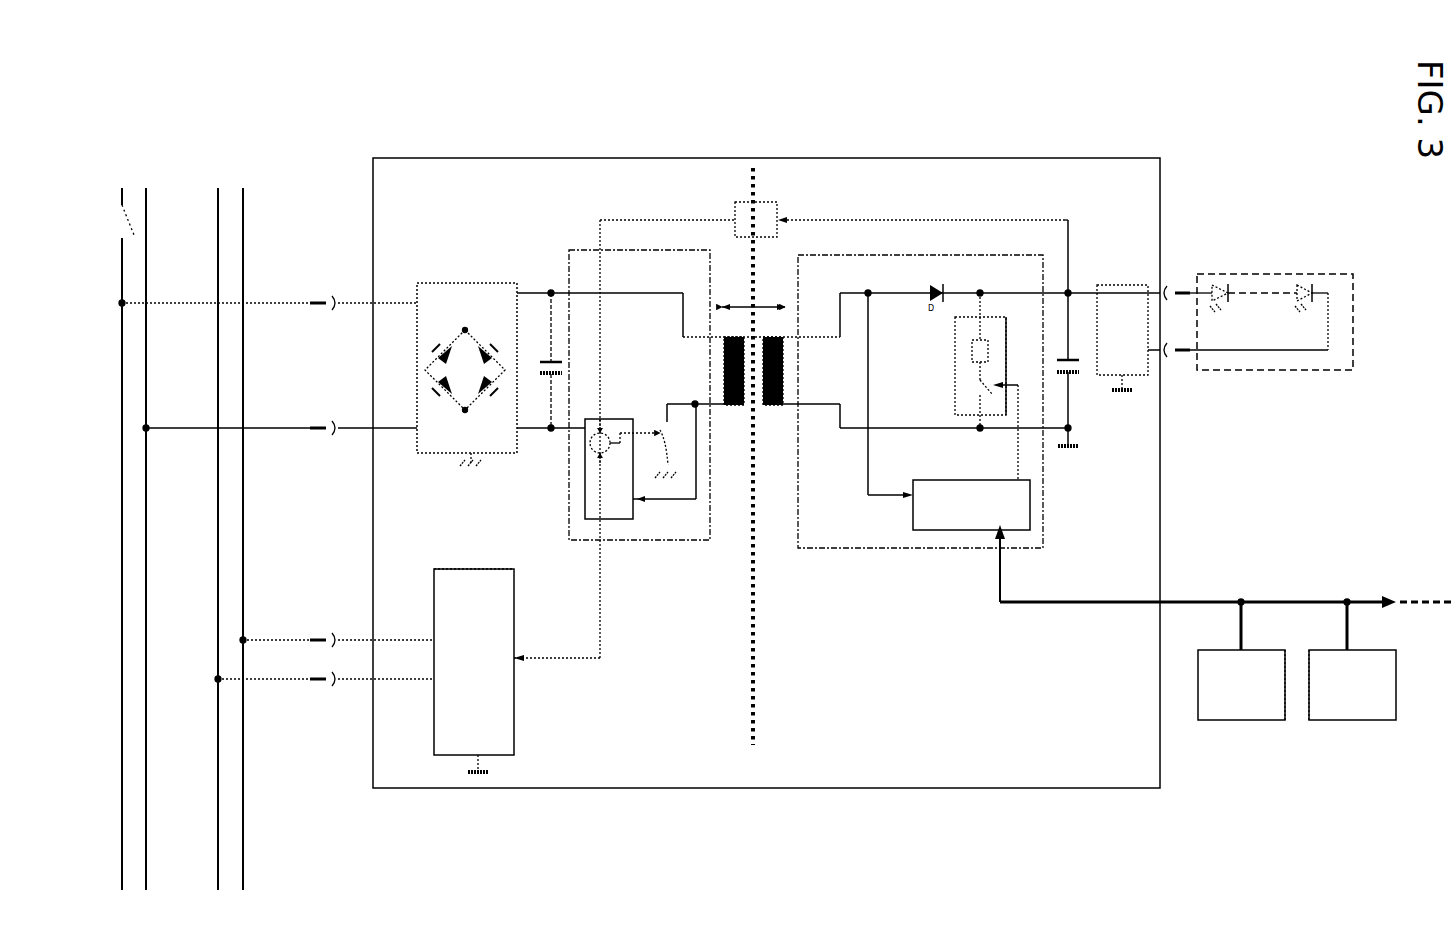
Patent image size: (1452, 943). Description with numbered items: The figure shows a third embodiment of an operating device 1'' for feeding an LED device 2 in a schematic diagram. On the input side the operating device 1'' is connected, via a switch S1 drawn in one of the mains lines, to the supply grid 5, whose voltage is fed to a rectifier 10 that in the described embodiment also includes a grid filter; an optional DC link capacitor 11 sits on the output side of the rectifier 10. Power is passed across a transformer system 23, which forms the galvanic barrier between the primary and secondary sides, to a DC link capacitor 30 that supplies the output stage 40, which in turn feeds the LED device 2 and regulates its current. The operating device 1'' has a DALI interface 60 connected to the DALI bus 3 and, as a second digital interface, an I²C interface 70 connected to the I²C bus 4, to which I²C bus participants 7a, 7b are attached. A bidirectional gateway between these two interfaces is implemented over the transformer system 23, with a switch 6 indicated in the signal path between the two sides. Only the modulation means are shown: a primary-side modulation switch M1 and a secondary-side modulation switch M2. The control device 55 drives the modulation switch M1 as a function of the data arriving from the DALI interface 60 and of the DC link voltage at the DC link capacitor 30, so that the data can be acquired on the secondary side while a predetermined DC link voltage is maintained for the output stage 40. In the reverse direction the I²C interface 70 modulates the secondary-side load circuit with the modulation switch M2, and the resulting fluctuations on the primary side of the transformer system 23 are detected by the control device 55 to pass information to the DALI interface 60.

The operating device 1'' is at (766, 448).
The LED device 2 is at (1298, 272).
The DALI bus 3 is at (232, 197).
The I²C bus 4 is at (1270, 600).
The supply grid 5 is at (131, 150).
The switch 6 is at (740, 300).
The I²C bus participant 7a is at (1230, 722).
The I²C bus participant 7b is at (1352, 722).
The rectifier 10 is at (449, 282).
The DC link capacitor 11 is at (545, 358).
The transformer system 23 is at (757, 405).
The DC link capacitor 30 is at (1070, 358).
The output stage 40 is at (1122, 285).
The control device 55 is at (603, 520).
The DALI interface 60 is at (514, 710).
The I²C interface 70 is at (942, 534).
The modulation switch M1 is at (662, 420).
The modulation switch M2 is at (975, 385).
The mains switch S1 is at (115, 220).